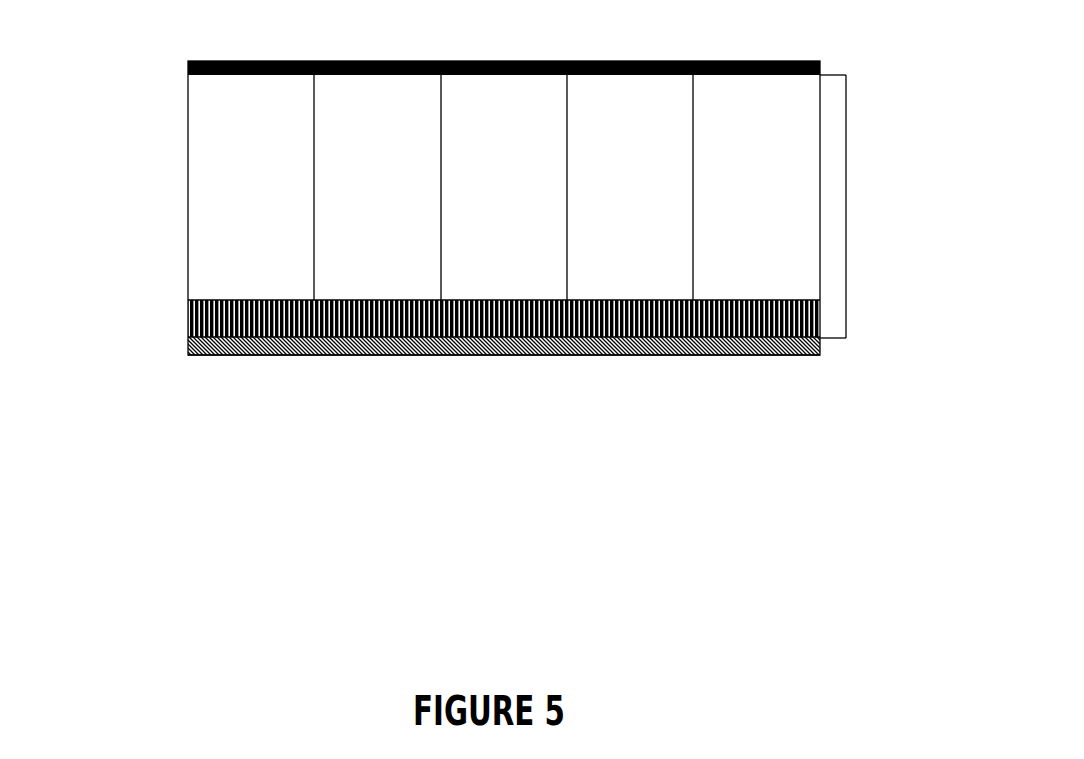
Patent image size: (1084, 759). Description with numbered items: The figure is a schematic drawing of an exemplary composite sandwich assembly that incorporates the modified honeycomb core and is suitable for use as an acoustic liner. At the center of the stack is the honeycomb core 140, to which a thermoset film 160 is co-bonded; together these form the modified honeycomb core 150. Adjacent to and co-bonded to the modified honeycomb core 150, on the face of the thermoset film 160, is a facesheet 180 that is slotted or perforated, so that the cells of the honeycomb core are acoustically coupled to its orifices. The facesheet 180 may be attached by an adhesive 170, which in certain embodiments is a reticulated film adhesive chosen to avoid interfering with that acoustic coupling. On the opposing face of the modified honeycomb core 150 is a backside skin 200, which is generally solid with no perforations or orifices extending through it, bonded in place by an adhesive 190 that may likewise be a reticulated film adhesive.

The honeycomb core 140 is at (188, 158).
The modified honeycomb core 150 is at (846, 205).
The thermoset film 160 is at (188, 312).
The adhesive 170 is at (846, 338).
The facesheet 180 is at (188, 346).
The adhesive 190 is at (846, 75).
The backside skin 200 is at (188, 62).